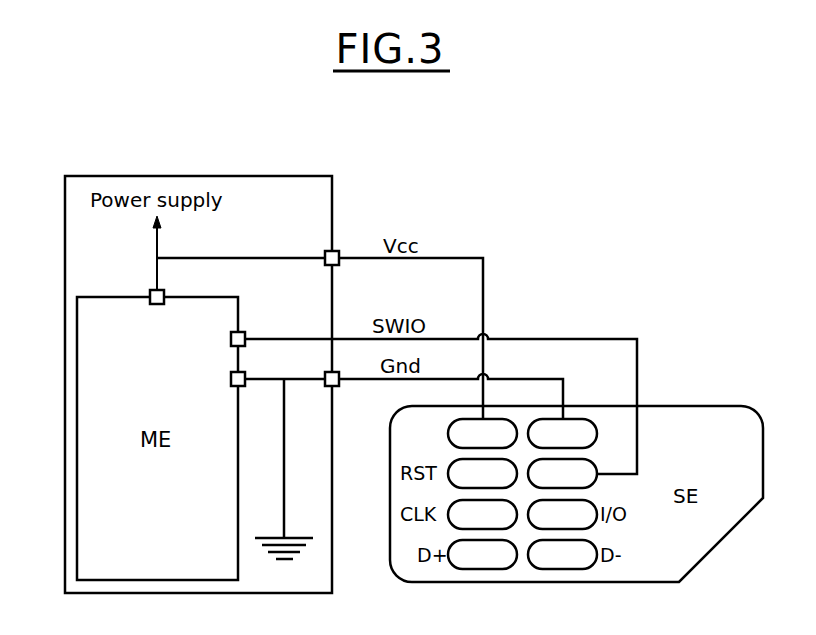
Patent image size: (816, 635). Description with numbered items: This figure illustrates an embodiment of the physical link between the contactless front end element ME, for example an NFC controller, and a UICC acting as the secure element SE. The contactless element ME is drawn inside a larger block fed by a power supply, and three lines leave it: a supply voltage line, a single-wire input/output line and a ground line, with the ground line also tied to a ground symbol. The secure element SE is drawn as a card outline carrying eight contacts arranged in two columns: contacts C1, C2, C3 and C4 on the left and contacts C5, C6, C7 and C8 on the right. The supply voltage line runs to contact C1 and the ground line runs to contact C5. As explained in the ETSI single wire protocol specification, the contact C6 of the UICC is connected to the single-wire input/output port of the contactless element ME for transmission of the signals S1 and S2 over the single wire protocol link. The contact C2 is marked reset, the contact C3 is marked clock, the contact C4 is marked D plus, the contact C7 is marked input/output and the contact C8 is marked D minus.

The contact C1 is at (482, 433).
The contact C2 is at (482, 473).
The contact C3 is at (482, 514).
The contact C4 is at (482, 554).
The contact C5 is at (562, 433).
The contact C6 is at (562, 473).
The contact C7 is at (562, 514).
The contact C8 is at (562, 554).